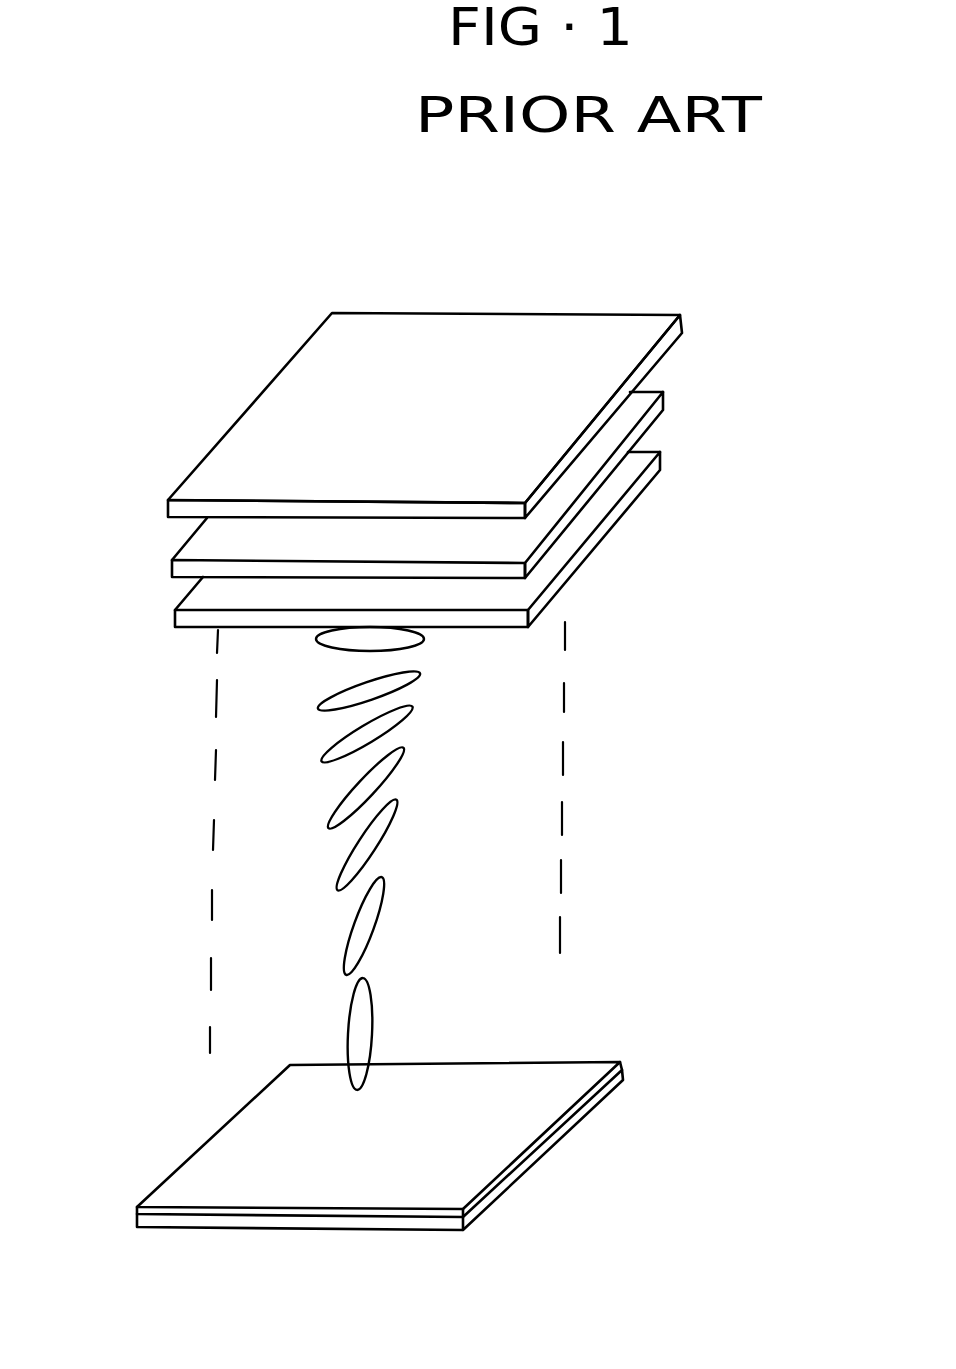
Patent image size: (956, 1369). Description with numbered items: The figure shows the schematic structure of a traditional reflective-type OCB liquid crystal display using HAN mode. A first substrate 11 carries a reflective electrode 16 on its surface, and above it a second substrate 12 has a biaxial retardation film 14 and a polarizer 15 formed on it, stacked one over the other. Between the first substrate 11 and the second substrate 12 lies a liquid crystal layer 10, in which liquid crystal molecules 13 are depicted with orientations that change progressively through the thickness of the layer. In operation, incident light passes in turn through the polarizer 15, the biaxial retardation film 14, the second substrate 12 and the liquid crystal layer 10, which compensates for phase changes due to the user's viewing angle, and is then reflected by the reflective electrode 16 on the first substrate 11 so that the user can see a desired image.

The liquid crystal layer 10 is at (617, 592).
The first substrate 11 is at (158, 1220).
The second substrate 12 is at (207, 592).
The liquid crystal molecules 13 is at (353, 853).
The biaxial retardation film 14 is at (208, 543).
The polarizer 15 is at (272, 423).
The reflective electrode 16 is at (163, 1188).